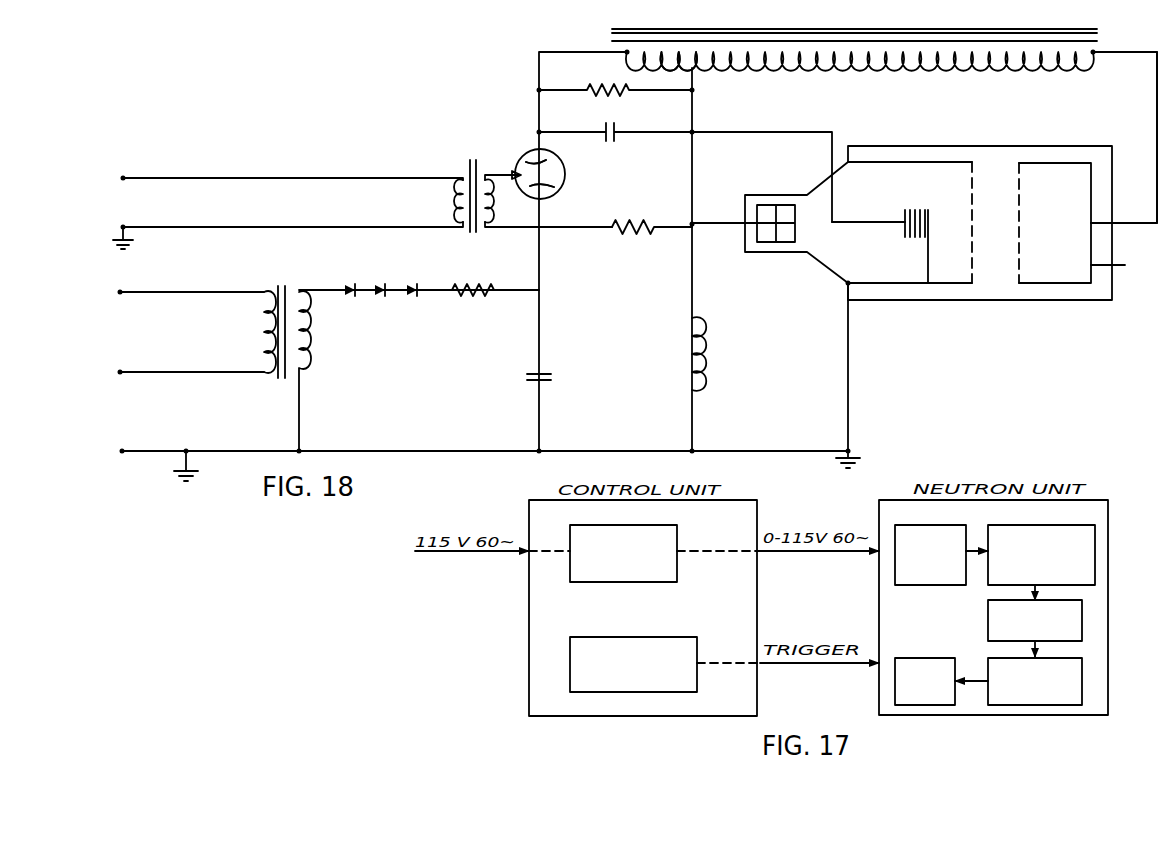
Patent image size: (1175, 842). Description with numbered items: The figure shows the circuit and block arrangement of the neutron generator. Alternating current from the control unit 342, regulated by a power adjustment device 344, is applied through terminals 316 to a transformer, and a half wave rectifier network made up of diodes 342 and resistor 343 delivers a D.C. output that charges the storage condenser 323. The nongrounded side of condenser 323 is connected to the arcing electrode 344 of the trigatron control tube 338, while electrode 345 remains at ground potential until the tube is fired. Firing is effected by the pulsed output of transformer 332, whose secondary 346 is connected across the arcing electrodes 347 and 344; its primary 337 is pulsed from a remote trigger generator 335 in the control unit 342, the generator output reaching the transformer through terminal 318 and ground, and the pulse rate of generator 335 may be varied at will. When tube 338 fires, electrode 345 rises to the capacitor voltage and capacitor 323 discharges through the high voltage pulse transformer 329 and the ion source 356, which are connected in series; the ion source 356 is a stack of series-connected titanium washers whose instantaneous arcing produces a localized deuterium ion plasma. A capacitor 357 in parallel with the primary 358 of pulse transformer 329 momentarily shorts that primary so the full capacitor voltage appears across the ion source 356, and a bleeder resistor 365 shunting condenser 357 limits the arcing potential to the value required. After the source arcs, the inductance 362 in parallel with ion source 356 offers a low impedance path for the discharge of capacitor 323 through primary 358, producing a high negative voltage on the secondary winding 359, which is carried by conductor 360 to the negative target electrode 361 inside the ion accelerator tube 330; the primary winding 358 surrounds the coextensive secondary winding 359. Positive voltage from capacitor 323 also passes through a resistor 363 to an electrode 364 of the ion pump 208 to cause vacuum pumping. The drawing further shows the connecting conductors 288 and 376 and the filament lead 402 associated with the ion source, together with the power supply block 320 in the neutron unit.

In FIG. 18, the ion pump 208 is at (766, 256).
In FIG. 18, the conductor 288 is at (722, 222).
In FIG. 18, the terminals 316 is at (120, 372).
In FIG. 18, the terminal 318 is at (123, 178).
In FIG. 18, the power supply transformer 320 is at (288, 290).
In FIG. 17, the power supply transformer 320 is at (946, 526).
In FIG. 18, the storage condenser 323 is at (550, 382).
In FIG. 17, the storage condenser 323 is at (1062, 526).
In FIG. 18, the high voltage pulse transformer 329 is at (830, 41).
In FIG. 17, the high voltage pulse transformer 329 is at (1000, 705).
In FIG. 18, the ion accelerator tube 330 is at (918, 146).
In FIG. 17, the ion accelerator tube 330 is at (918, 658).
In FIG. 18, the transformer 332 is at (476, 178).
In FIG. 17, the trigger generator 335 is at (641, 637).
In FIG. 18, the primary 337 is at (455, 204).
In FIG. 18, the trigatron control tube 338 is at (555, 196).
In FIG. 17, the trigatron control tube 338 is at (988, 618).
In FIG. 18, the control unit 342 is at (378, 297).
In FIG. 17, the control unit 342 is at (529, 501).
In FIG. 18, the resistor 343 is at (470, 298).
In FIG. 18, the arcing electrode 344 is at (562, 182).
In FIG. 17, the arcing electrode 344 is at (677, 528).
In FIG. 18, the electrode 345 is at (560, 170).
In FIG. 18, the secondary 346 is at (490, 208).
In FIG. 18, the arcing electrode 347 is at (522, 172).
In FIG. 18, the ion source 356 is at (912, 212).
In FIG. 18, the capacitor 357 is at (617, 132).
In FIG. 18, the primary 358 is at (682, 72).
In FIG. 18, the secondary winding 359 is at (880, 70).
In FIG. 18, the conductor 360 is at (1157, 118).
In FIG. 18, the negative target electrode 361 is at (1126, 271).
In FIG. 18, the inductance 362 is at (708, 352).
In FIG. 18, the resistor 363 is at (641, 238).
In FIG. 18, the electrode 364 is at (776, 213).
In FIG. 18, the bleeder resistor 365 is at (600, 88).
In FIG. 18, the conductor 376 is at (806, 132).
In FIG. 18, the filament lead 402 is at (902, 230).